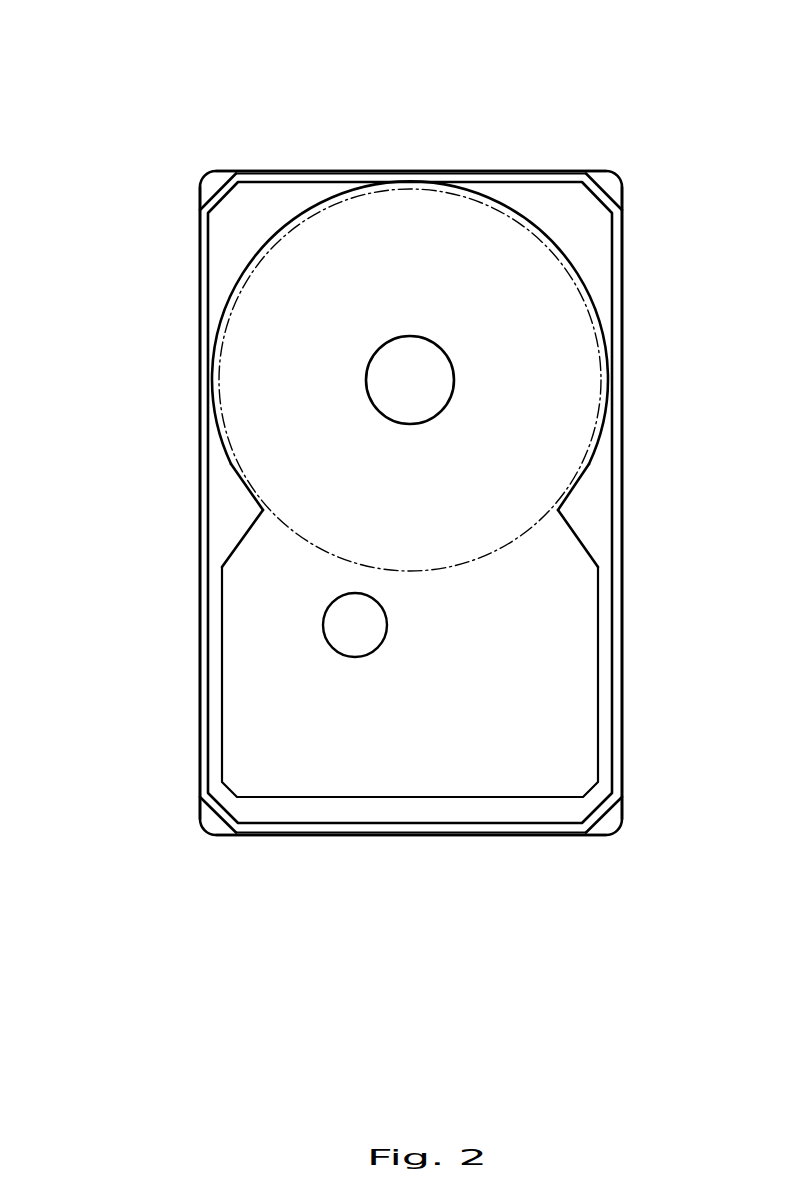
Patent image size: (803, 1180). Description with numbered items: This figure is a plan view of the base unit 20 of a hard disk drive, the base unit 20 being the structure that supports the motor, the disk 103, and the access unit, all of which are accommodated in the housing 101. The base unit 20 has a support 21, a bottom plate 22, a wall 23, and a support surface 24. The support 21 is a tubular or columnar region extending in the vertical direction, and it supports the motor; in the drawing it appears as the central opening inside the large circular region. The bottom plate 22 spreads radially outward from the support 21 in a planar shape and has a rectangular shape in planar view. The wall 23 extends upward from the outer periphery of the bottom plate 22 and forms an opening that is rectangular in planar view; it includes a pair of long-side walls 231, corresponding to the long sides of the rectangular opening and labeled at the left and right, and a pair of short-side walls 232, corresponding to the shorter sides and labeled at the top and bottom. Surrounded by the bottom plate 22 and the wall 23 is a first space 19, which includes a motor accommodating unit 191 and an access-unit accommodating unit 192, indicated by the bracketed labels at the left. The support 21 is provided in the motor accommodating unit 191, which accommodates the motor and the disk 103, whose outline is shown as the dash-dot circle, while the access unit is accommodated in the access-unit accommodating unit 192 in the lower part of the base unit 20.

The housing 101 is at (305, 92).
The base unit 20 is at (233, 155).
The wall 23 is at (559, 153).
The long-side walls 231 is at (628, 520).
The short-side walls 232 is at (501, 168).
The support surface 24 is at (598, 270).
The bottom plate 22 is at (578, 728).
The disk 103 is at (253, 268).
The support 21 is at (385, 358).
The first space 19 is at (322, 512).
The motor accommodating unit 191 is at (262, 458).
The access-unit accommodating unit 192 is at (260, 567).